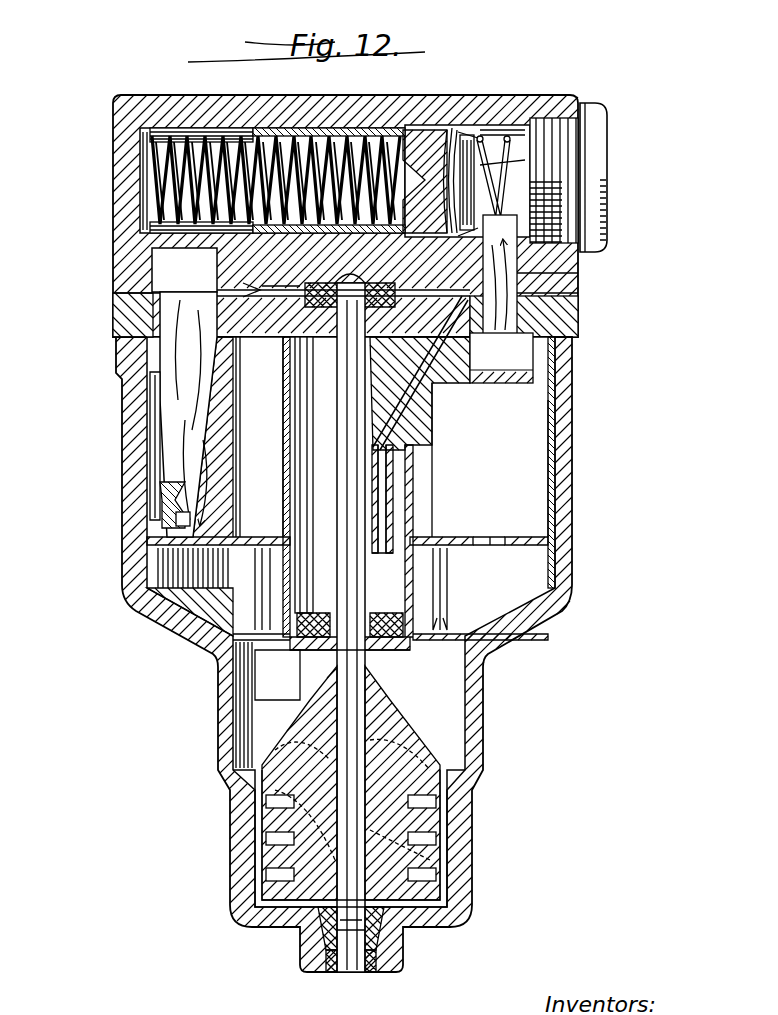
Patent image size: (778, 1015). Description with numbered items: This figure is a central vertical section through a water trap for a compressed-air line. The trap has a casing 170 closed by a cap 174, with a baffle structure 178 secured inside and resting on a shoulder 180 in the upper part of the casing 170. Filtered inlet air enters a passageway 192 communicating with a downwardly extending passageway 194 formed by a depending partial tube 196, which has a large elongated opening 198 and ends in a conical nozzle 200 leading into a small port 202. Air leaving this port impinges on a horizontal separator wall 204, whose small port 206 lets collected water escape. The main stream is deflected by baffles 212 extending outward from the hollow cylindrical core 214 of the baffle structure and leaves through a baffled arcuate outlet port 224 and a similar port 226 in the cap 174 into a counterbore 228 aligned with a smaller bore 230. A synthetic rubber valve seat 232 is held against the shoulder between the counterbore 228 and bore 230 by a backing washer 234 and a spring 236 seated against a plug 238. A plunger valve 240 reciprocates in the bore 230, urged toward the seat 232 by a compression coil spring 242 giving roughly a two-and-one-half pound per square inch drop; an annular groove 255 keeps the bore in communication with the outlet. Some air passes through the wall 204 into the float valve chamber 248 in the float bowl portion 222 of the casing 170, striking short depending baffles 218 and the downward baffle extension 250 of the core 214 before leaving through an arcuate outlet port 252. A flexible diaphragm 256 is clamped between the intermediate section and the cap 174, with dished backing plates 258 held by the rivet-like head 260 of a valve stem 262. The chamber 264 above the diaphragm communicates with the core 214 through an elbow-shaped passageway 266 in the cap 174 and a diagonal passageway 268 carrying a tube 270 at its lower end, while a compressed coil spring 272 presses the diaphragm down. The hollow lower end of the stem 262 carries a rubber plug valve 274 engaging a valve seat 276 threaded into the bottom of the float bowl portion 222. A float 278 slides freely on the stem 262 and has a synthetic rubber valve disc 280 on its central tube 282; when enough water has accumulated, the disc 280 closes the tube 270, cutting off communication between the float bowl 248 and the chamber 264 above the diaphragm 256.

The casing 170 is at (572, 505).
The cap 174 is at (287, 98).
The baffle structure 178 is at (572, 462).
The shoulder 180 is at (548, 540).
The passageway 192 is at (160, 262).
The downwardly extending passageway 194 is at (153, 322).
The depending partial tube 196 is at (232, 476).
The elongated opening 198 is at (163, 405).
The conical nozzle 200 is at (163, 488).
The small port 202 is at (183, 520).
The horizontal separator wall 204 is at (168, 552).
The small port 206 is at (143, 610).
The baffles 212 is at (445, 472).
The hollow cylindrical core 214 is at (287, 430).
The baffles 218 is at (266, 585).
The float bowl portion 222 is at (215, 690).
The arcuate outlet port 224 is at (578, 316).
The port 226 is at (578, 268).
The counterbore 228 is at (497, 127).
The bore 230 is at (425, 130).
The valve seat 232 is at (455, 125).
The backing washer 234 is at (463, 130).
The spring 236 is at (525, 163).
The plug 238 is at (597, 168).
The plunger valve 240 is at (343, 97).
The compression coil spring 242 is at (193, 135).
The float valve chamber 248 is at (432, 688).
The baffle extension 250 is at (282, 640).
The arcuate outlet port 252 is at (490, 537).
The annular groove 255 is at (258, 100).
The diaphragm 256 is at (113, 292).
The backing plates 258 is at (263, 437).
The rivet-like head 260 is at (347, 305).
The valve stem 262 is at (345, 480).
The chamber 264 is at (232, 272).
The elbow-shaped passageway 266 is at (578, 280).
The diagonal passageway 268 is at (425, 372).
The tube 270 is at (393, 512).
The compressed coil spring 272 is at (255, 228).
The rubber plug valve 274 is at (318, 950).
The valve seat 276 is at (365, 968).
The float 278 is at (432, 742).
The valve disc 280 is at (378, 612).
The central tube 282 is at (370, 660).